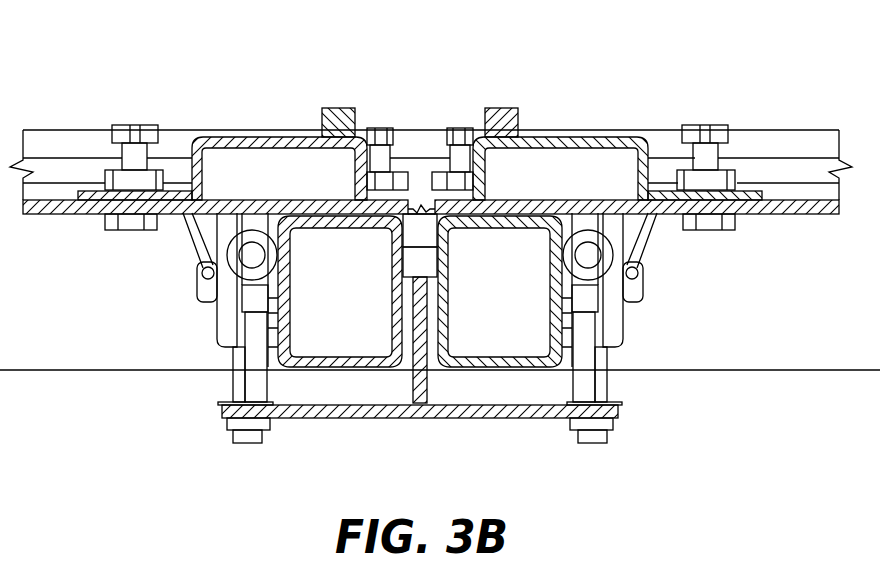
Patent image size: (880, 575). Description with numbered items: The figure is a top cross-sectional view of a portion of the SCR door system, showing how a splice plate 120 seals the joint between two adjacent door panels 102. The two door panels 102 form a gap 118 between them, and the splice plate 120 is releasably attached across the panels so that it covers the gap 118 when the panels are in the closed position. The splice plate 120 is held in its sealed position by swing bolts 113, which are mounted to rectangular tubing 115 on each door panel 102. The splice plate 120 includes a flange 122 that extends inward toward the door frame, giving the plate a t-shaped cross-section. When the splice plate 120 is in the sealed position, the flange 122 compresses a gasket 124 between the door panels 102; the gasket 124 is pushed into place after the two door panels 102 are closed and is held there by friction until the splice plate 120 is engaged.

The door panel 102 is at (328, 205).
The swing bolt 113 is at (232, 385).
The rectangular tubing 115 is at (567, 281).
The gap 118 is at (418, 198).
The splice plate 120 is at (335, 418).
The flange 122 is at (420, 332).
The gasket 124 is at (425, 233).